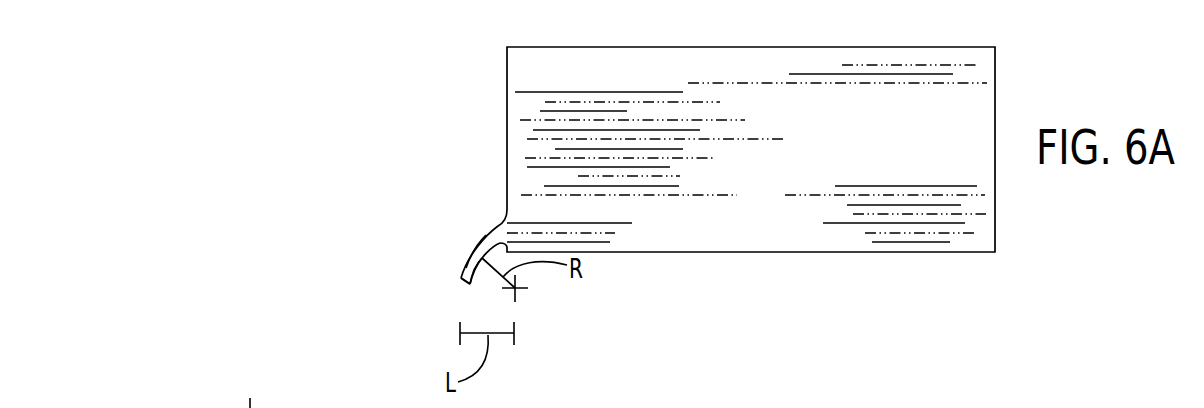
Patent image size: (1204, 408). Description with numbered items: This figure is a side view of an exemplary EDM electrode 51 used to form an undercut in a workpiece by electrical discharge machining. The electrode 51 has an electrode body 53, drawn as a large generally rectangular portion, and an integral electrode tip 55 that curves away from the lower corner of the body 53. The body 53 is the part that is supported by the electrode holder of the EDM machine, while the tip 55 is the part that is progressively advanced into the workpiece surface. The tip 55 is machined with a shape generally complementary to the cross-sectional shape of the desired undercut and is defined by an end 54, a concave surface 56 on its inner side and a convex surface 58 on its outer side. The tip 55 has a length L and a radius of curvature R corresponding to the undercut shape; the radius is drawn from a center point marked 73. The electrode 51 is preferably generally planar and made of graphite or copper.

The electrode 51 is at (523, 47).
The electrode body 53 is at (717, 53).
The electrode tip 55 is at (490, 233).
The convex surface 58 is at (467, 257).
The end 54 is at (461, 280).
The concave surface 56 is at (472, 283).
The center of radius 73 is at (517, 287).